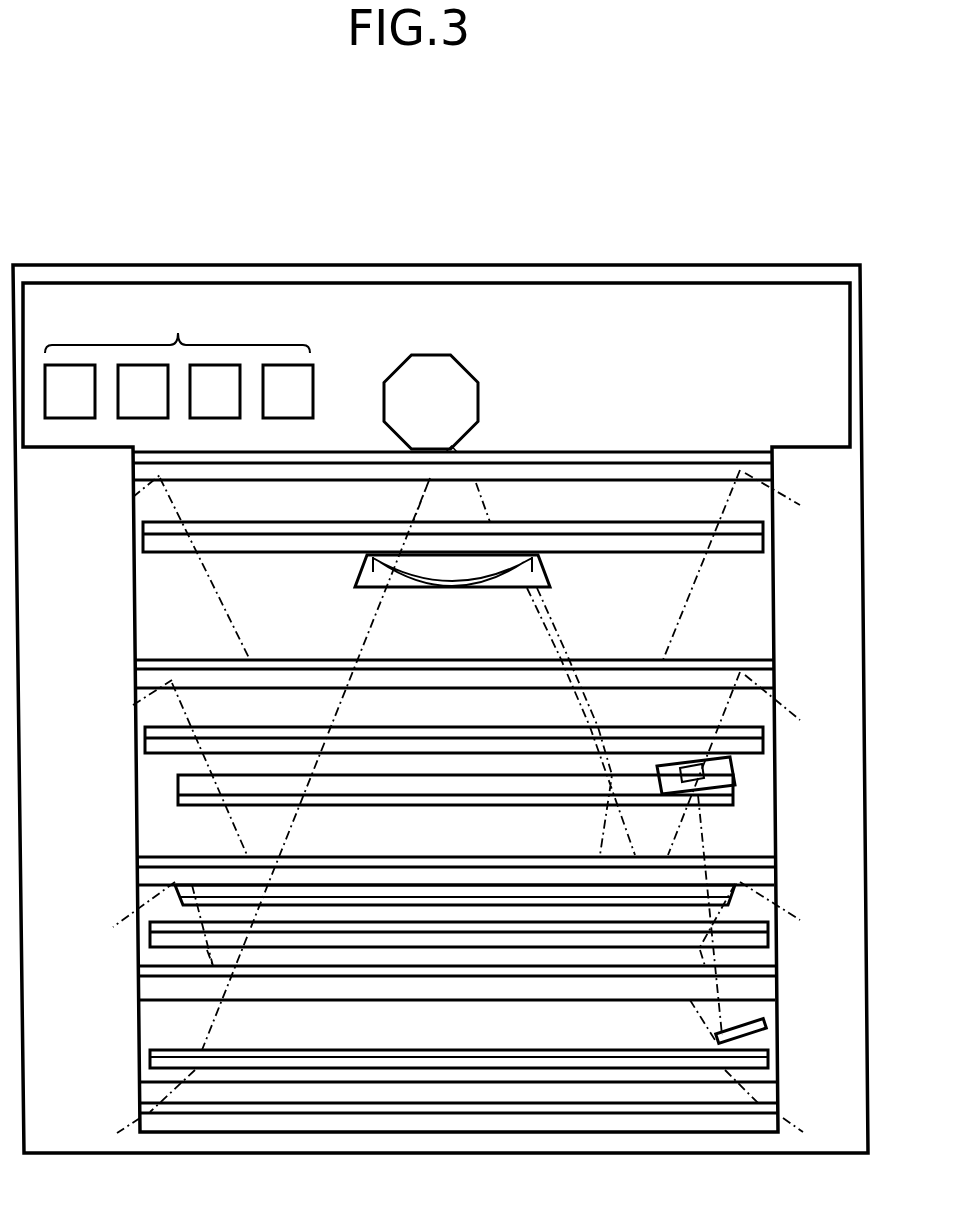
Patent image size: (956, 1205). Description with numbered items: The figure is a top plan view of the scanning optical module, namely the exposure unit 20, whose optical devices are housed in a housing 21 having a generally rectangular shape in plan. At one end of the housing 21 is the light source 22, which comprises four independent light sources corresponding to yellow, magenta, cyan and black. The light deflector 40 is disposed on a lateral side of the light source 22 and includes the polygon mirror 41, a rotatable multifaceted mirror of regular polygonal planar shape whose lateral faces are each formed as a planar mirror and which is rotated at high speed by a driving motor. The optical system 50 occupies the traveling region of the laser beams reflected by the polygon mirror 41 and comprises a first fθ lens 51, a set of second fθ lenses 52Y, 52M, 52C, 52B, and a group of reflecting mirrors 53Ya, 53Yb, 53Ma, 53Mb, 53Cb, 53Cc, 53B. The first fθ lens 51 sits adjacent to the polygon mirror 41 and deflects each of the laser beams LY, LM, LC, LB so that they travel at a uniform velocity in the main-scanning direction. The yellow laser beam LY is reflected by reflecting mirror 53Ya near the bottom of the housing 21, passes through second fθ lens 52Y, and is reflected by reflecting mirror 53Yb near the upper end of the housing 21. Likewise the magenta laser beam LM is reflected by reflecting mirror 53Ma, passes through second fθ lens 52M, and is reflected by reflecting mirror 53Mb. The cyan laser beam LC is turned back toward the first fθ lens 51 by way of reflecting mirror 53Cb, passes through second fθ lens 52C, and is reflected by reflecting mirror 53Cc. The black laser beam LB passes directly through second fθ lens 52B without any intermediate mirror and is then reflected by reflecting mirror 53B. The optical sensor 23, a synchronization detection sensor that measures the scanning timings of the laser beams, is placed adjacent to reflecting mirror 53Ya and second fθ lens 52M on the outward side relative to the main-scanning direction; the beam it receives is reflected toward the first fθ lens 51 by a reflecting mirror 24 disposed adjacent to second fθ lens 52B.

The exposure unit 20 is at (308, 196).
The housing 21 is at (688, 265).
The light source 22 is at (178, 333).
The light deflector 40 is at (468, 374).
The polygon mirror 41 is at (478, 404).
The first fθ lens 51 is at (550, 581).
The optical system 50 is at (150, 798).
The optical sensor 23 is at (705, 777).
The reflecting mirror 24 is at (766, 1020).
The second fθ lens 52Y is at (197, 553).
The second fθ lens 52M is at (765, 731).
The second fθ lens 52C is at (150, 938).
The second fθ lens 52B is at (150, 1055).
The reflecting mirror 53Yb is at (686, 452).
The reflecting mirror 53Ya is at (722, 804).
The reflecting mirror 53Mb is at (290, 660).
The reflecting mirror 53Ma is at (400, 893).
The reflecting mirror 53Cc is at (158, 876).
The reflecting mirror 53Cb is at (158, 986).
The reflecting mirror 53B is at (160, 1094).
The yellow laser beam LY is at (120, 498).
The magenta laser beam LM is at (125, 705).
The cyan laser beam LC is at (783, 906).
The black laser beam LB is at (785, 1113).